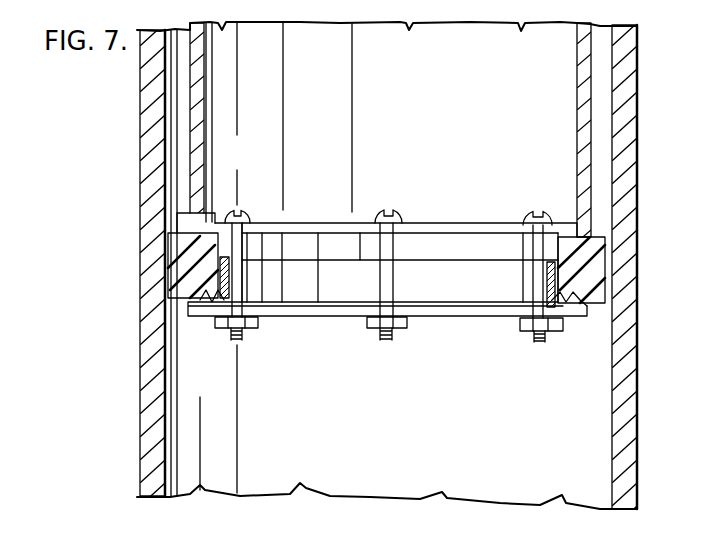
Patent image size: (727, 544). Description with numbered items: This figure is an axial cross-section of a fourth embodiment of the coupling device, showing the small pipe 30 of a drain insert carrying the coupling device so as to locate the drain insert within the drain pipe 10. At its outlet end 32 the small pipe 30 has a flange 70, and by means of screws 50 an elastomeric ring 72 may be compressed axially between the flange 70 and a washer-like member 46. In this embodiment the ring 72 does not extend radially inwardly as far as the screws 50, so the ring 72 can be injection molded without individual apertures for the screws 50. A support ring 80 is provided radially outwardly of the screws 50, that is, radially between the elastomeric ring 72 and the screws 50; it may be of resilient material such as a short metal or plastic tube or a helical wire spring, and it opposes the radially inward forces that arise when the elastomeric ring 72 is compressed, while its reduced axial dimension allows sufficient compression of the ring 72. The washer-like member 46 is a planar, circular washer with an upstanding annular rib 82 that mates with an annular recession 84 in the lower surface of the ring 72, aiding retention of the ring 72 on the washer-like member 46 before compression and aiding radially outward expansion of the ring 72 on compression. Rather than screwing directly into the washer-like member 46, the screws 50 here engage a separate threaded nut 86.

The drain pipe 10 is at (632, 78).
The small pipe 30 is at (577, 88).
The outlet end 32 is at (192, 223).
The washer-like member 46 is at (207, 318).
The screws 50 is at (548, 343).
The flange 70 is at (232, 207).
The elastomeric ring 72 is at (182, 262).
The support ring 80 is at (218, 284).
The annular rib 82 is at (570, 318).
The annular recession 84 is at (560, 298).
The threaded nut 86 is at (250, 329).